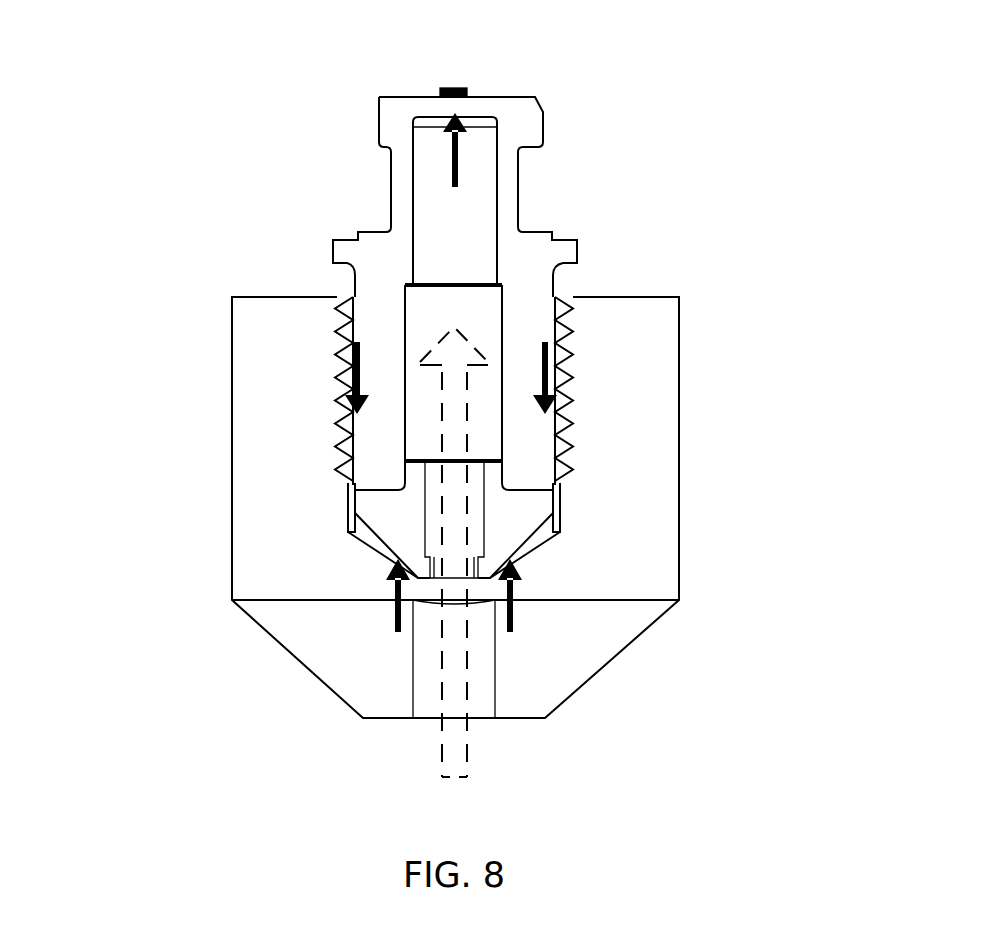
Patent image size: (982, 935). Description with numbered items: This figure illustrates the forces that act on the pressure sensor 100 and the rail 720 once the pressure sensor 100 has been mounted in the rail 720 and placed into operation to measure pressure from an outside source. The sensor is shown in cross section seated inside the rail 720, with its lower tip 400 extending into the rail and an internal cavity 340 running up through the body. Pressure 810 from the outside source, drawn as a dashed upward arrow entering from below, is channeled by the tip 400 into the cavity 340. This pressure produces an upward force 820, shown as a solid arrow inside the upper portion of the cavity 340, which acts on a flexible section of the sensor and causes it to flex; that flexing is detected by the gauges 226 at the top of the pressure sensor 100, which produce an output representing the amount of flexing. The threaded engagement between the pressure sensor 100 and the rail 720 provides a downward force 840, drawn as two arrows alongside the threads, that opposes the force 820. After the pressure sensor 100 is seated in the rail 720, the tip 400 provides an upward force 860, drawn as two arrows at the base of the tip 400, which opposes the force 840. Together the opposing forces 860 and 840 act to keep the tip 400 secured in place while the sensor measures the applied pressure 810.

The pressure sensor 100 is at (525, 123).
The gauges 226 is at (448, 88).
The cavity 340 is at (472, 248).
The force 820 is at (452, 170).
The rail 720 is at (630, 443).
The tip 400 is at (517, 528).
The pressure 810 is at (467, 763).
The force 840 is at (553, 368).
The force 860 is at (500, 622).